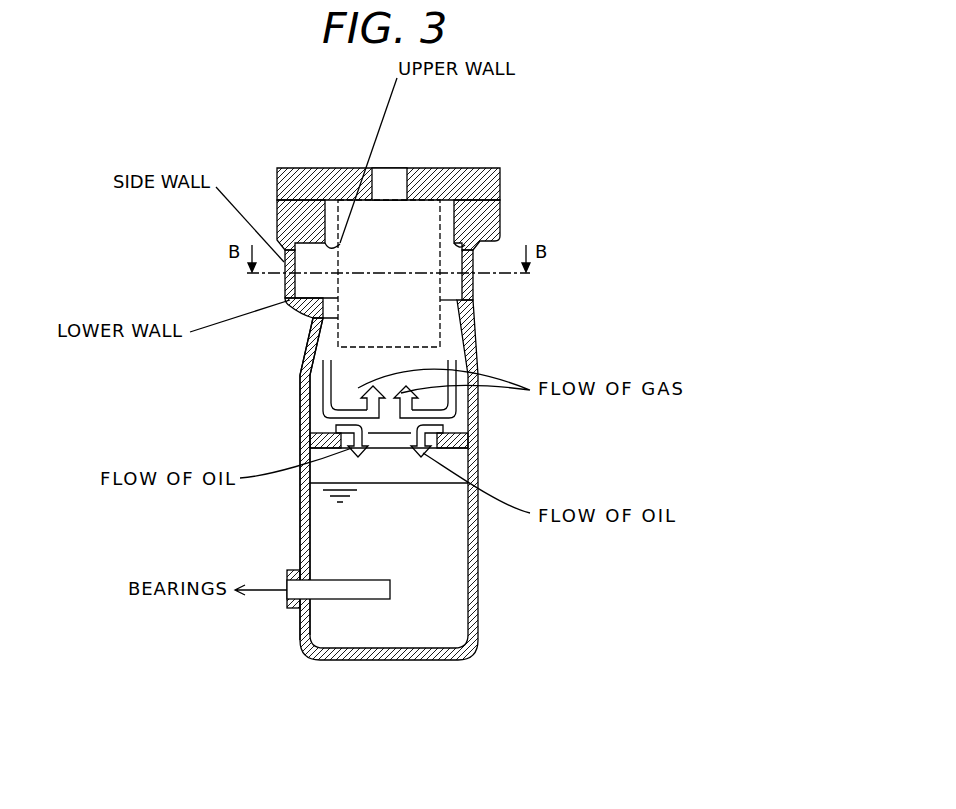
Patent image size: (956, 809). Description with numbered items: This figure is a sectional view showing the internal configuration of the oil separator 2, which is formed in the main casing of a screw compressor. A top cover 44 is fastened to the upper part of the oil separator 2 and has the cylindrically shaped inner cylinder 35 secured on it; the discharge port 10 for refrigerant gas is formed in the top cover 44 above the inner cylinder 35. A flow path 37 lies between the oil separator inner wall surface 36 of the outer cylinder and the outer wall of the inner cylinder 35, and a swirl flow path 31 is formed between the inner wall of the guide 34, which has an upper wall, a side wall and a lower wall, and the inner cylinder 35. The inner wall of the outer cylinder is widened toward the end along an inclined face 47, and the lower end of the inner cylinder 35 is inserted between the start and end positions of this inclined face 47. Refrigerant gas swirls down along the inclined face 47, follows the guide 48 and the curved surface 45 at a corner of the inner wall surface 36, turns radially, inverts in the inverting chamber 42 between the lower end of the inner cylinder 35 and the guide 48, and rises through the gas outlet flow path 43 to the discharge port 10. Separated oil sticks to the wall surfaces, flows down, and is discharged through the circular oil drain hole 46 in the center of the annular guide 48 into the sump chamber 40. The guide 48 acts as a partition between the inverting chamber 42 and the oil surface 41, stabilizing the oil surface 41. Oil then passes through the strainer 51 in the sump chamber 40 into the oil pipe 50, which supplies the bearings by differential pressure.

The oil separator 2 is at (420, 184).
The discharge port 10 is at (400, 177).
The swirl flow path 31 is at (287, 288).
The guide 34 is at (284, 267).
The inner cylinder 35 is at (310, 320).
The oil separator inner wall surface 36 is at (317, 405).
The flow path 37 is at (450, 318).
The sump chamber 40 is at (455, 616).
The oil surface 41 is at (312, 483).
The inverting chamber 42 is at (395, 357).
The gas outlet flow path 43 is at (418, 222).
The top cover 44 is at (293, 168).
The curved surface 45 is at (455, 422).
The oil drain hole 46 is at (387, 442).
The inclined face 47 is at (307, 358).
The guide 48 is at (470, 448).
The oil pipe 50 is at (265, 593).
The strainer 51 is at (345, 599).